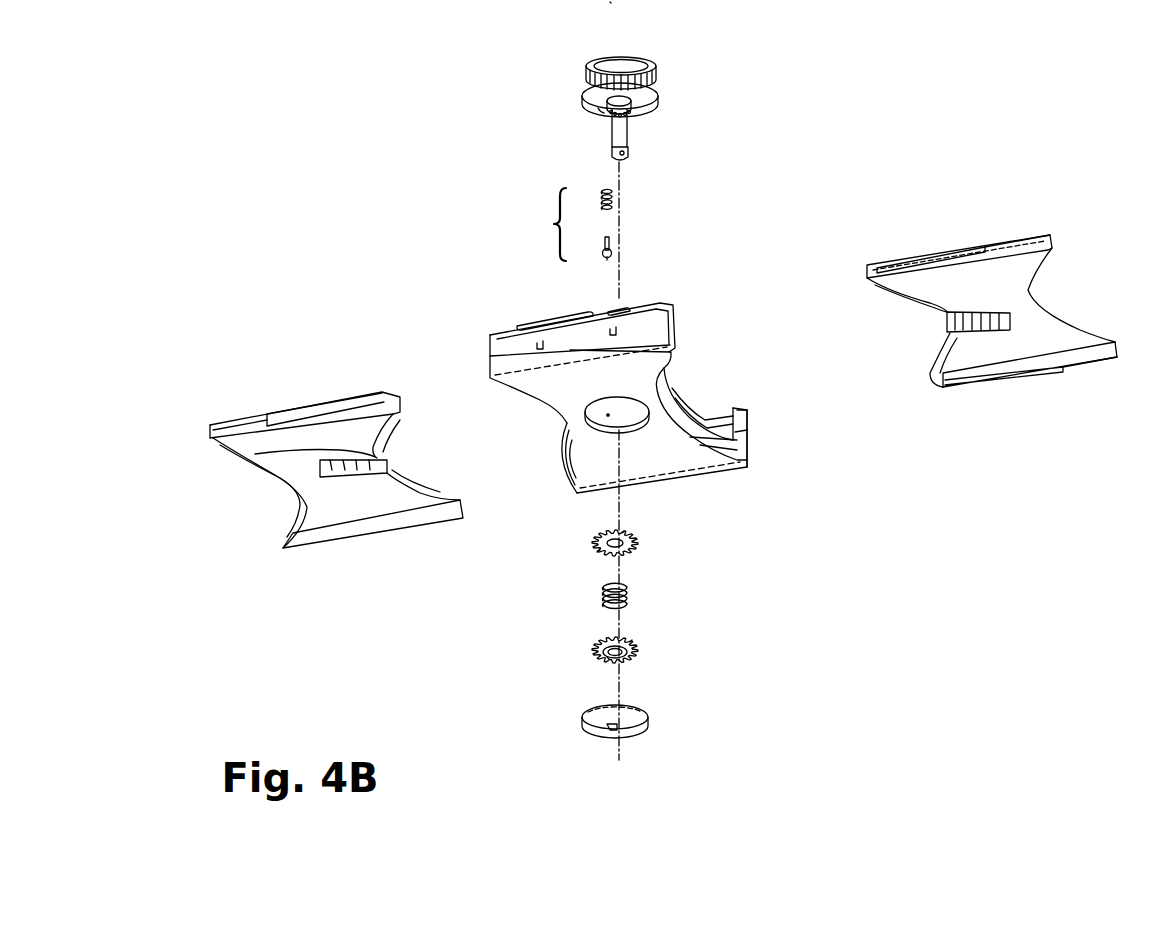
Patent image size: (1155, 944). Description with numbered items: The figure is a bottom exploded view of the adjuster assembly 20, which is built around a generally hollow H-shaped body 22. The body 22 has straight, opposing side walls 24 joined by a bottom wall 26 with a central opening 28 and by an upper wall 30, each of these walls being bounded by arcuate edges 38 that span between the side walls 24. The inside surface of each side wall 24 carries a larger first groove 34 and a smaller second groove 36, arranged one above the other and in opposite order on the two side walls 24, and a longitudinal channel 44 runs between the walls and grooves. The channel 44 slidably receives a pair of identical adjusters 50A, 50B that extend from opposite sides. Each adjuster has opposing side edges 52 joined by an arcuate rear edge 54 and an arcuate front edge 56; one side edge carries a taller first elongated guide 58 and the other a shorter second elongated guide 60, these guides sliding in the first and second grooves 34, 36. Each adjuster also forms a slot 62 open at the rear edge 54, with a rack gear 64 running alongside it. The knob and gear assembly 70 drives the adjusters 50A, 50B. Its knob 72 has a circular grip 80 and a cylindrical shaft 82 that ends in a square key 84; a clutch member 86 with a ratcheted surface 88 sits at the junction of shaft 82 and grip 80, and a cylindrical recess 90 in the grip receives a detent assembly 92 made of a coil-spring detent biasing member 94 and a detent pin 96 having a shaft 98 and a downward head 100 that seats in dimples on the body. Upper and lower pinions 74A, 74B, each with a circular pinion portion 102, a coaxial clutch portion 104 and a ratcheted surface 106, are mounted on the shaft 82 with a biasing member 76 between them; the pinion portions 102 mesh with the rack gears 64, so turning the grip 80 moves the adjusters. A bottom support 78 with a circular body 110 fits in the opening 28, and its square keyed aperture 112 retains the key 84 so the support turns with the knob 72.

The adjuster assembly 20 is at (853, 138).
The body 22 is at (625, 393).
The side walls 24 is at (507, 361).
The bottom wall 26 is at (557, 388).
The central opening 28 is at (608, 415).
The upper wall 30 is at (700, 418).
The first groove 34 is at (672, 312).
The second groove 36 is at (674, 338).
The arcuate edges 38 is at (660, 403).
The longitudinal channel 44 is at (688, 415).
The adjuster 50A is at (652, 391).
The adjuster 50B is at (991, 266).
The side edges 52 is at (245, 425).
The arcuate rear edge 54 is at (407, 490).
The arcuate front edge 56 is at (278, 477).
The first elongated guide 58 is at (307, 407).
The second elongated guide 60 is at (931, 245).
The slot 62 is at (362, 470).
The rack gear 64 is at (258, 455).
The knob and gear assembly 70 is at (641, 655).
The knob 72 is at (626, 92).
The upper pinion 74A is at (637, 553).
The lower pinion 74B is at (625, 660).
The biasing member 76 is at (605, 597).
The bottom support 78 is at (602, 758).
The grip 80 is at (619, 60).
The shaft 82 is at (622, 134).
The key 84 is at (628, 153).
The clutch member 86 is at (632, 104).
The ratcheted surface 88 is at (630, 112).
The recess 90 is at (600, 110).
The detent assembly 92 is at (599, 220).
The detent biasing member 94 is at (604, 190).
The detent pin 96 is at (614, 253).
The shaft 98 is at (613, 243).
The head 100 is at (607, 260).
The pinion portion 102 is at (597, 552).
The clutch portion 104 is at (598, 645).
The ratcheted surface 106 is at (625, 533).
The body 110 is at (592, 723).
The keyed aperture 112 is at (618, 728).